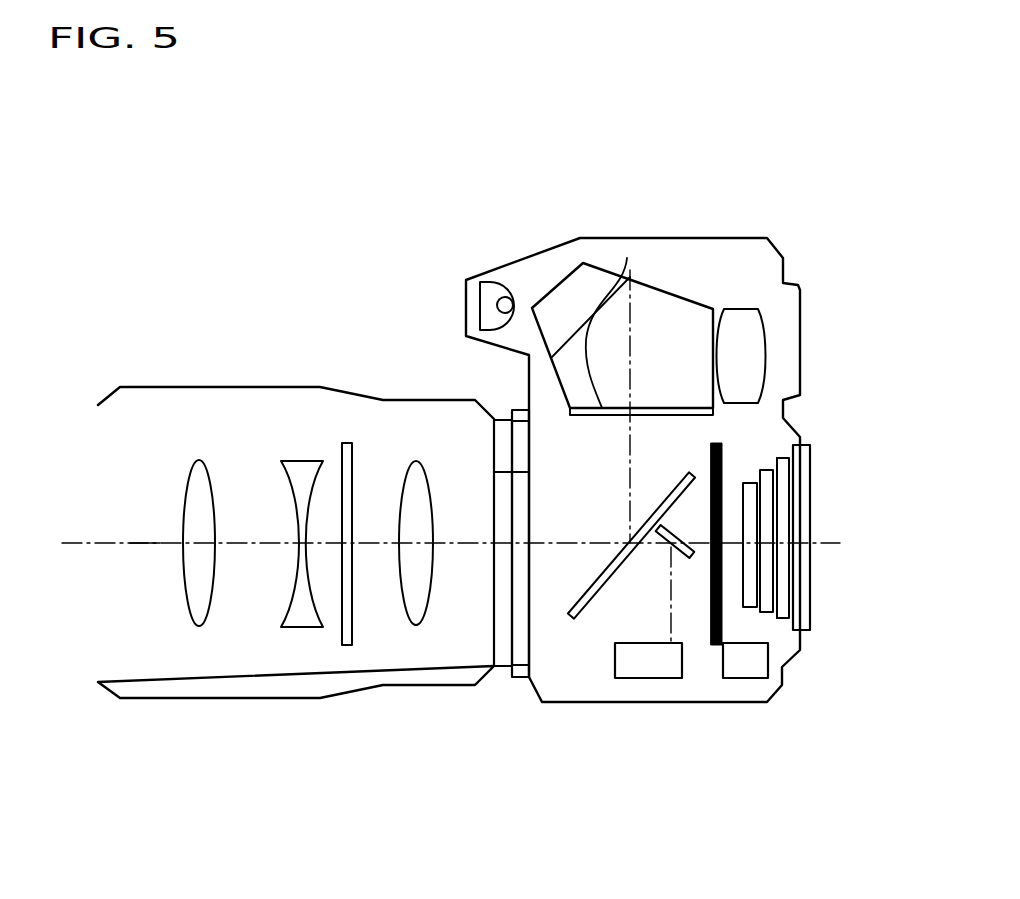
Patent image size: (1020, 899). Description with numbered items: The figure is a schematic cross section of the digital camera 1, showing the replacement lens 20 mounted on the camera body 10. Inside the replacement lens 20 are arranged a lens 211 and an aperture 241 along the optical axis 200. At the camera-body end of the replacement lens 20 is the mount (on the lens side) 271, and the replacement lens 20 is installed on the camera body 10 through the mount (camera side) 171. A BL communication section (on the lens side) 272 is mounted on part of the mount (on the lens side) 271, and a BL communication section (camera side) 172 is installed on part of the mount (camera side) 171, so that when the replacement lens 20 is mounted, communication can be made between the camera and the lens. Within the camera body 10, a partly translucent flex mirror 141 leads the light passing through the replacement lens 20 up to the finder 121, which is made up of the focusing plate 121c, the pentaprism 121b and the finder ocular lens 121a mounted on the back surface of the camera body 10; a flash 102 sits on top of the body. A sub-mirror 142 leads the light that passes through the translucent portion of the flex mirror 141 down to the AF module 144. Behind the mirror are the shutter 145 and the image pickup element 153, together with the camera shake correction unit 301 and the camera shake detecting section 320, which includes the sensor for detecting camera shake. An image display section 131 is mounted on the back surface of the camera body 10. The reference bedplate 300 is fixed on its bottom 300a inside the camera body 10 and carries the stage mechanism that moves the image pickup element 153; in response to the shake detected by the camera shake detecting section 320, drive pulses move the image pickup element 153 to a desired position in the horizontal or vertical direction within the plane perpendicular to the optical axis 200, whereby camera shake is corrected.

The digital camera 1 is at (427, 150).
The camera body 10 is at (533, 257).
The replacement lens 20 is at (97, 456).
The flash 102 is at (489, 289).
The finder 121 is at (637, 157).
The finder ocular lens 121a is at (742, 312).
The pentaprism 121b is at (676, 288).
The focusing plate 121c is at (627, 258).
The image display section 131 is at (808, 472).
The flex mirror 141 is at (586, 620).
The sub-mirror 142 is at (678, 530).
The AF module 144 is at (655, 665).
The shutter 145 is at (723, 630).
The image pickup element 153 is at (745, 541).
The mount (camera side) 171 is at (520, 678).
The BL communication section (camera side) 172 is at (523, 435).
The optical axis 200 is at (142, 545).
The lens 211 is at (415, 597).
The aperture 241 is at (345, 443).
The mount (on the lens side) 271 is at (503, 667).
The BL communication section (on the lens side) 272 is at (503, 445).
The reference bedplate 300 is at (767, 602).
The bottom of reference bedplate 300a is at (783, 563).
The camera shake correction unit 301 is at (783, 617).
The camera shake detecting section 320 is at (748, 665).